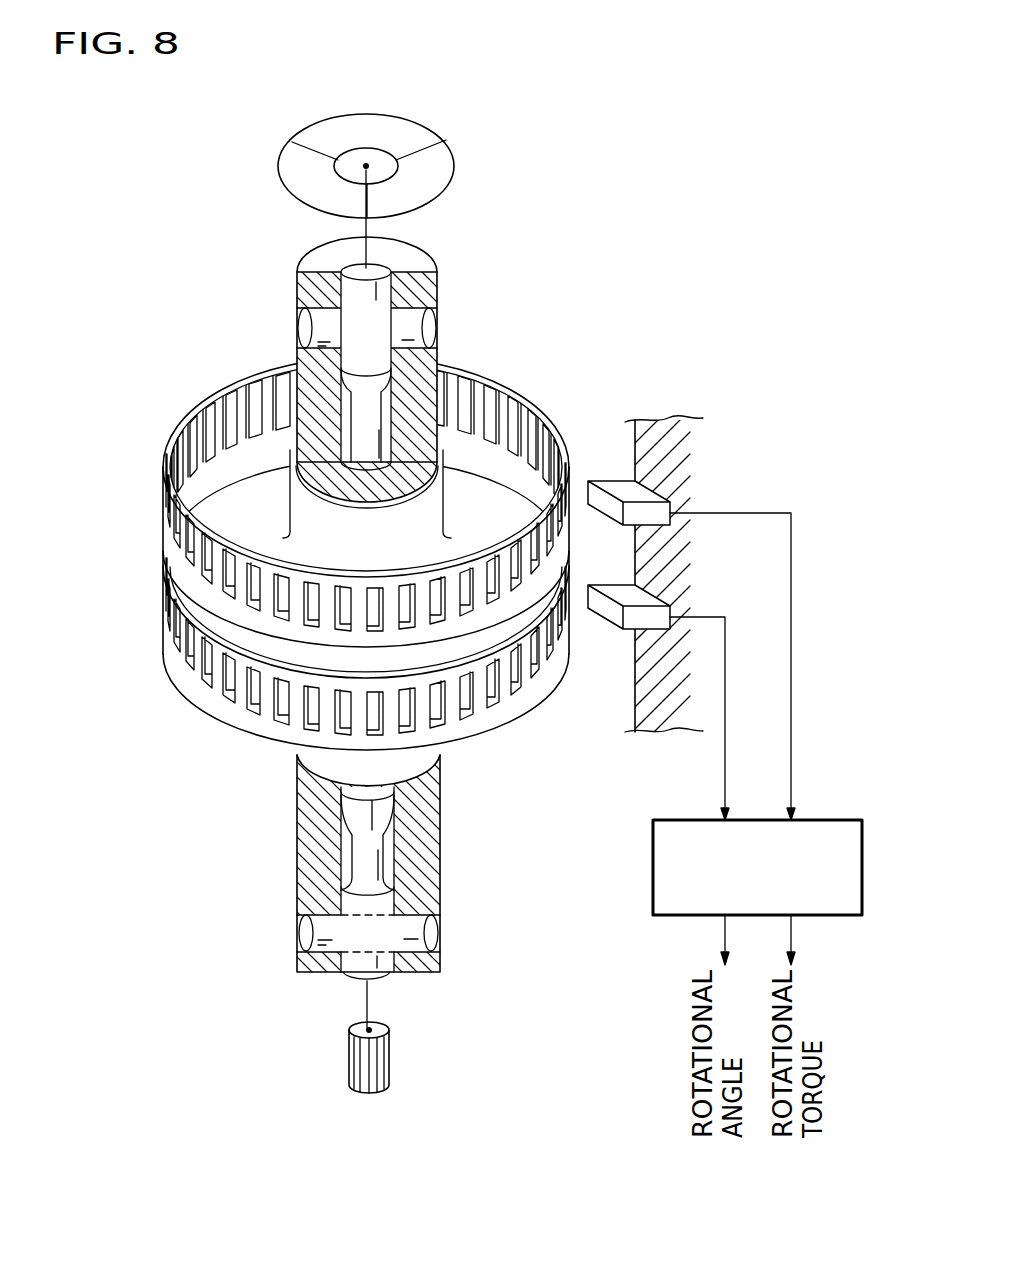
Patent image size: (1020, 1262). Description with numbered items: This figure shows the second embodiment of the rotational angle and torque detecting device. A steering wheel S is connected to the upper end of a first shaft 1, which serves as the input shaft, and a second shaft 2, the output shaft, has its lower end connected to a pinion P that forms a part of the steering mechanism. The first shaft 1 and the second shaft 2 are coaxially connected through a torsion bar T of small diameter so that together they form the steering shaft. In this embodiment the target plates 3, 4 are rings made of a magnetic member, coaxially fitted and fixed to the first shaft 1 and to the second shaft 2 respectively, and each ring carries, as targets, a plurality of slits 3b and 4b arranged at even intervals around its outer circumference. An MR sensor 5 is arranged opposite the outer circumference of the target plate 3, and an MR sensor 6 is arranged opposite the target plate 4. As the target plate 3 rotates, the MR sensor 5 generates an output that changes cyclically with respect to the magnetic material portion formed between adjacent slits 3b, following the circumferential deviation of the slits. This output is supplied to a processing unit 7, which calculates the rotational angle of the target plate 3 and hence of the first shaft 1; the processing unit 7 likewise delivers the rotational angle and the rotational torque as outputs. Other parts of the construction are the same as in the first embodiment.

The steering wheel S is at (456, 166).
The first shaft 1 is at (432, 367).
The second shaft 2 is at (438, 857).
The torsion bar T is at (357, 398).
The target plate 3 is at (173, 437).
The slits 3b is at (240, 597).
The target plate 4 is at (170, 567).
The slits 4b is at (267, 727).
The MR sensor 5 is at (607, 477).
The MR sensor 6 is at (603, 611).
The processing unit 7 is at (653, 858).
The pinion P is at (390, 1058).